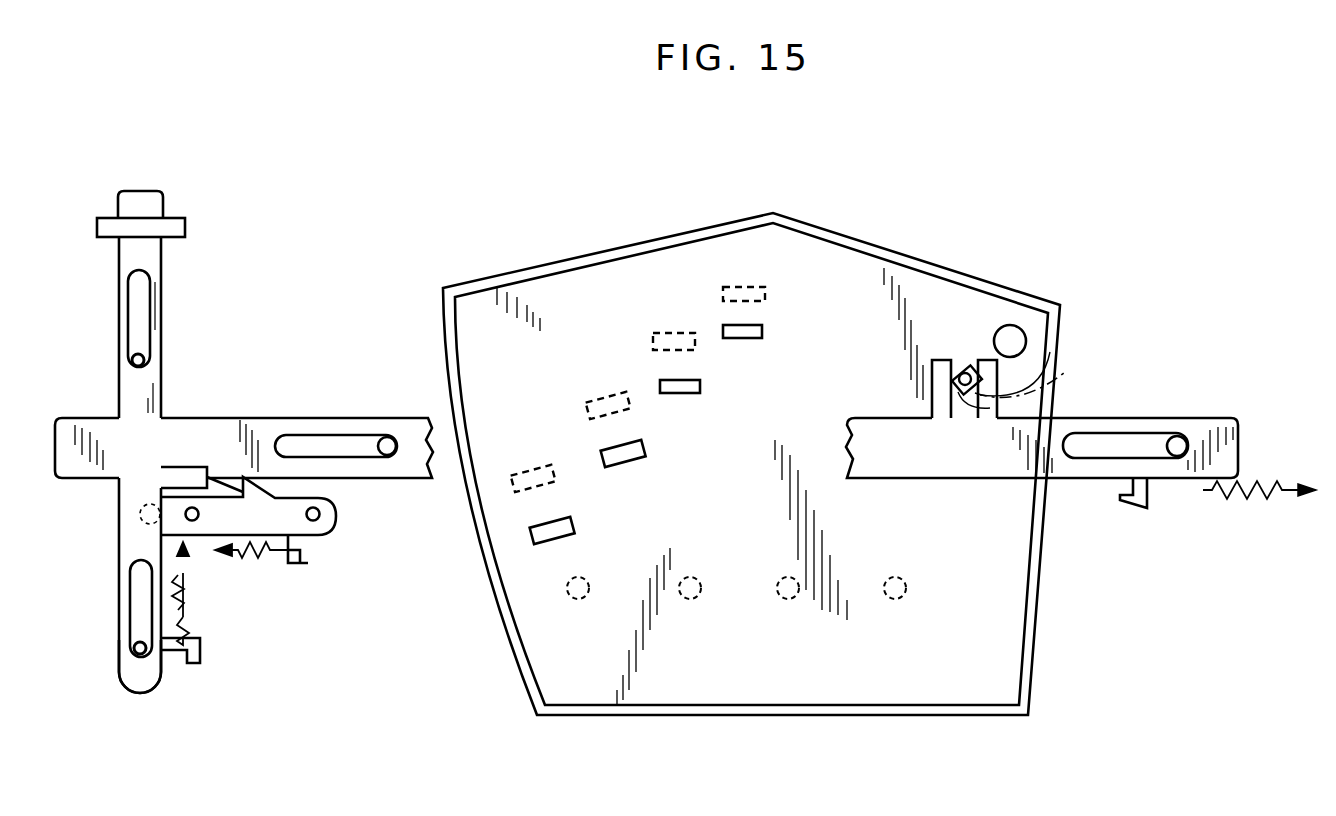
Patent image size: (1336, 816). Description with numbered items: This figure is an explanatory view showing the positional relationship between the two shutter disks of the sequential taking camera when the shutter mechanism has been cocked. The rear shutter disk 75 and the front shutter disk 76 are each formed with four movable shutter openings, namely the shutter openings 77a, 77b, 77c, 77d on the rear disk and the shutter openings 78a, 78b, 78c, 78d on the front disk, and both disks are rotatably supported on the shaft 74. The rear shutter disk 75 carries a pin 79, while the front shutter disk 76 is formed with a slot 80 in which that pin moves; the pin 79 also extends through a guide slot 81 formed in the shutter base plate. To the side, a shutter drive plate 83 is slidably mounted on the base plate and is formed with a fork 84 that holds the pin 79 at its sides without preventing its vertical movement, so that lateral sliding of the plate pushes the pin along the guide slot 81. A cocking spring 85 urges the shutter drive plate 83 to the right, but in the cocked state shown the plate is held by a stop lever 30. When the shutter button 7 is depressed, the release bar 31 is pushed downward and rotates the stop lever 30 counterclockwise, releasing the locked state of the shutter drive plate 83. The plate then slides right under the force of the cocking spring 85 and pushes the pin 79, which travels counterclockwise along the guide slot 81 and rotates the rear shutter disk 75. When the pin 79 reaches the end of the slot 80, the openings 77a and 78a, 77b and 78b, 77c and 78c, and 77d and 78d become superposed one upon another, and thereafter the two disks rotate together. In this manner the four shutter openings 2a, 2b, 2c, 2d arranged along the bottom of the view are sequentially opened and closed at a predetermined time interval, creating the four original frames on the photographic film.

The shutter button 7 is at (141, 200).
The shutter drive plate 83 is at (213, 418).
The stop lever 30 is at (212, 522).
The release bar 31 is at (142, 683).
The rear shutter disk 75 is at (845, 237).
The front shutter disk 76 is at (909, 265).
The shutter opening 77a is at (537, 467).
The shutter opening 77b is at (607, 392).
The shutter opening 77c is at (675, 330).
The shutter opening 77d is at (743, 285).
The shutter opening 78a is at (576, 525).
The shutter opening 78b is at (645, 447).
The shutter opening 78c is at (701, 387).
The shutter opening 78d is at (763, 331).
The shaft 74 is at (1018, 340).
The pin 79 is at (965, 372).
The slot 80 is at (968, 398).
The guide slot 81 is at (1065, 372).
The fork 84 is at (985, 418).
The cocking spring 85 is at (1240, 498).
The shutter opening 2a is at (582, 600).
The shutter opening 2b is at (692, 600).
The shutter opening 2c is at (790, 600).
The shutter opening 2d is at (897, 600).